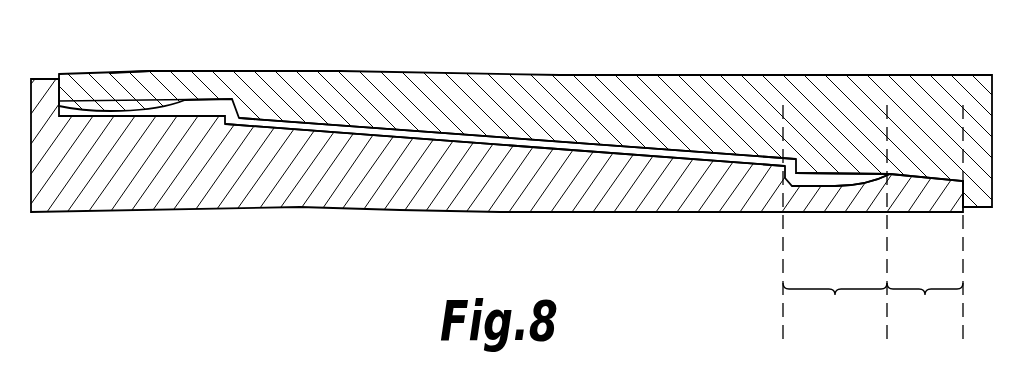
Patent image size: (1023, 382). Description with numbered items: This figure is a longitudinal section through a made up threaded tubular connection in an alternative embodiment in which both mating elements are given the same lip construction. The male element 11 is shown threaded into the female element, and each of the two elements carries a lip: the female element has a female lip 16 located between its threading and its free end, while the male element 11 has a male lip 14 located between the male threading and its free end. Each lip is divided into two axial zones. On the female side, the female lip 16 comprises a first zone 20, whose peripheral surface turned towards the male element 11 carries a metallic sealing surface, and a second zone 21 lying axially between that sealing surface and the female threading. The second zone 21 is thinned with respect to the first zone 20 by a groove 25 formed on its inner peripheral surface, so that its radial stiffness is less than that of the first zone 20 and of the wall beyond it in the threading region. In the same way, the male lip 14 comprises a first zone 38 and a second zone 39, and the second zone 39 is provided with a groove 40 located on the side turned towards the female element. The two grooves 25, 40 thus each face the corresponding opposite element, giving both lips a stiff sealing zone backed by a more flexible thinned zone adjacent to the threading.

The male element 11 is at (200, 213).
The female lip 16 is at (173, 71).
The first zone 20 is at (132, 73).
The second zone 21 is at (213, 71).
The groove 25 is at (207, 100).
The groove 40 is at (818, 176).
The male lip 14 is at (926, 213).
The first zone 38 is at (835, 225).
The second zone 39 is at (925, 225).